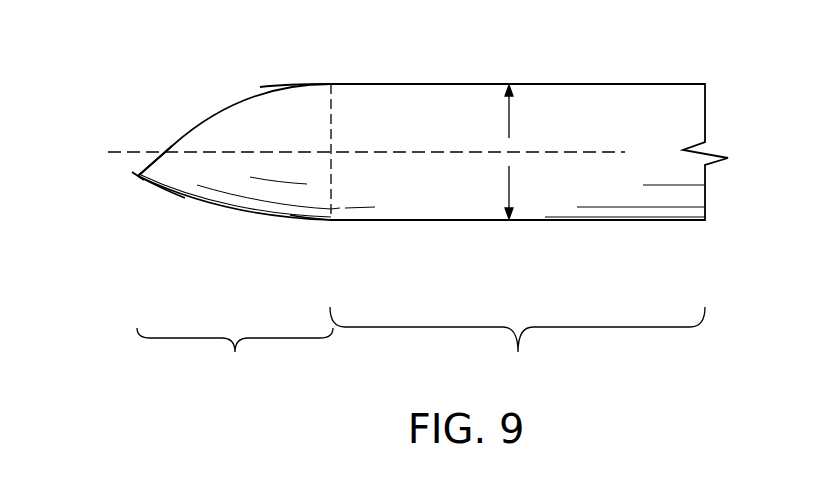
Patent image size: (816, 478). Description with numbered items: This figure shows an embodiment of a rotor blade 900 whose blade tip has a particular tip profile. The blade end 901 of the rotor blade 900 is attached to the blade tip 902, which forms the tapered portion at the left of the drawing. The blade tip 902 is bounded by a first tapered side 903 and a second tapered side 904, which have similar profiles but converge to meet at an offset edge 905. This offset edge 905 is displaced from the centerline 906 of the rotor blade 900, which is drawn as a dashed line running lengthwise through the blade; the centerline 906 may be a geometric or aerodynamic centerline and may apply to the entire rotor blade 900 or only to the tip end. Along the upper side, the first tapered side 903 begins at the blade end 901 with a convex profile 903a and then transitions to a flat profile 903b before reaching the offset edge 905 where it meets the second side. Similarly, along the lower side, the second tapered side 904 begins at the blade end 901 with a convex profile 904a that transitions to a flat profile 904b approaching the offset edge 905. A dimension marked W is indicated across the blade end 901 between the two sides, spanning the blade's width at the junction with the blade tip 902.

The rotor blade 900 is at (650, 137).
The blade end 901 is at (517, 346).
The blade tip 902 is at (235, 356).
The first tapered side 903 is at (228, 110).
The convex profile 903a is at (275, 83).
The flat profile 903b is at (167, 132).
The second tapered side 904 is at (231, 210).
The convex profile 904a is at (300, 233).
The flat profile 904b is at (162, 205).
The offset edge 905 is at (138, 176).
The centerline 906 is at (408, 148).
The width W is at (509, 152).